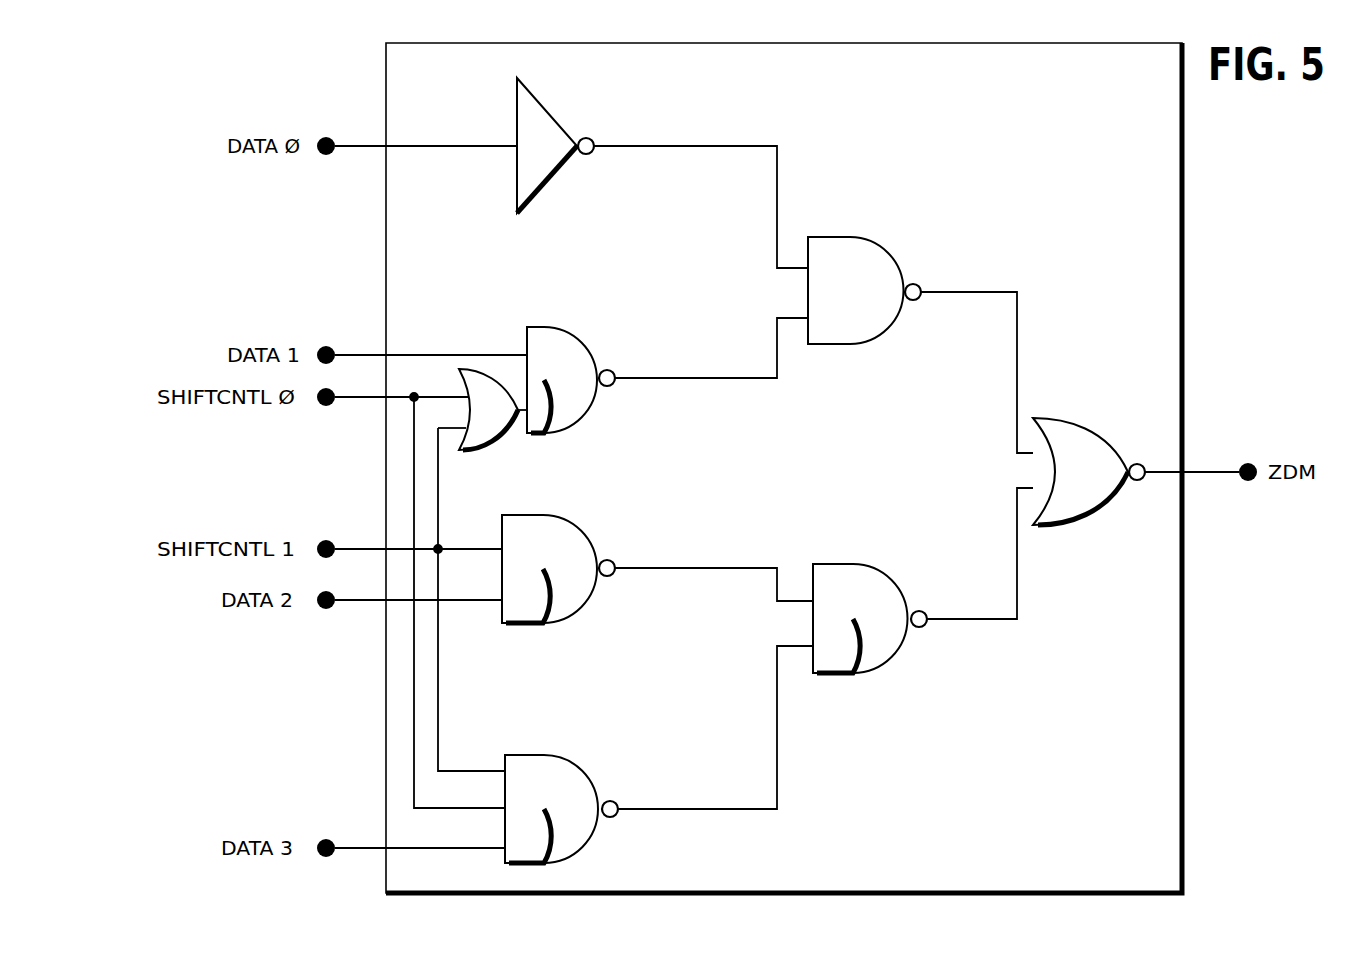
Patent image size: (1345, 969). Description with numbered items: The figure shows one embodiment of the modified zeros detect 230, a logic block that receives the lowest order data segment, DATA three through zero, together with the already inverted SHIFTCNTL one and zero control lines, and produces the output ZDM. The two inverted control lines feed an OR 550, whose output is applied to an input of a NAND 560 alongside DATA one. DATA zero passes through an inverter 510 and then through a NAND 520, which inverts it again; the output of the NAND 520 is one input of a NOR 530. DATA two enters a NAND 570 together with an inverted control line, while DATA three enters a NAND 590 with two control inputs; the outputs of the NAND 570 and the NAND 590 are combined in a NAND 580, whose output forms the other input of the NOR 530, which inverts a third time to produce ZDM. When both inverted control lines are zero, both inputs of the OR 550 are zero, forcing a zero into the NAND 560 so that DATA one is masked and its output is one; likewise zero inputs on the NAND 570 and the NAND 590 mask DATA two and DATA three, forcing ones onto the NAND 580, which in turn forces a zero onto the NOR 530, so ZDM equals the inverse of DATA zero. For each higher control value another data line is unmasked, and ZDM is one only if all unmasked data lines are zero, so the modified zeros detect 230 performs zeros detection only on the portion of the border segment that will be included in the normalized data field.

The modified zeros detect 230 is at (1084, 152).
The inverter 510 is at (555, 145).
The NAND 520 is at (864, 290).
The NOR 530 is at (1089, 471).
The OR 550 is at (489, 409).
The NAND 560 is at (571, 380).
The NAND 570 is at (558, 569).
The NAND 580 is at (870, 618).
The NAND 590 is at (561, 809).